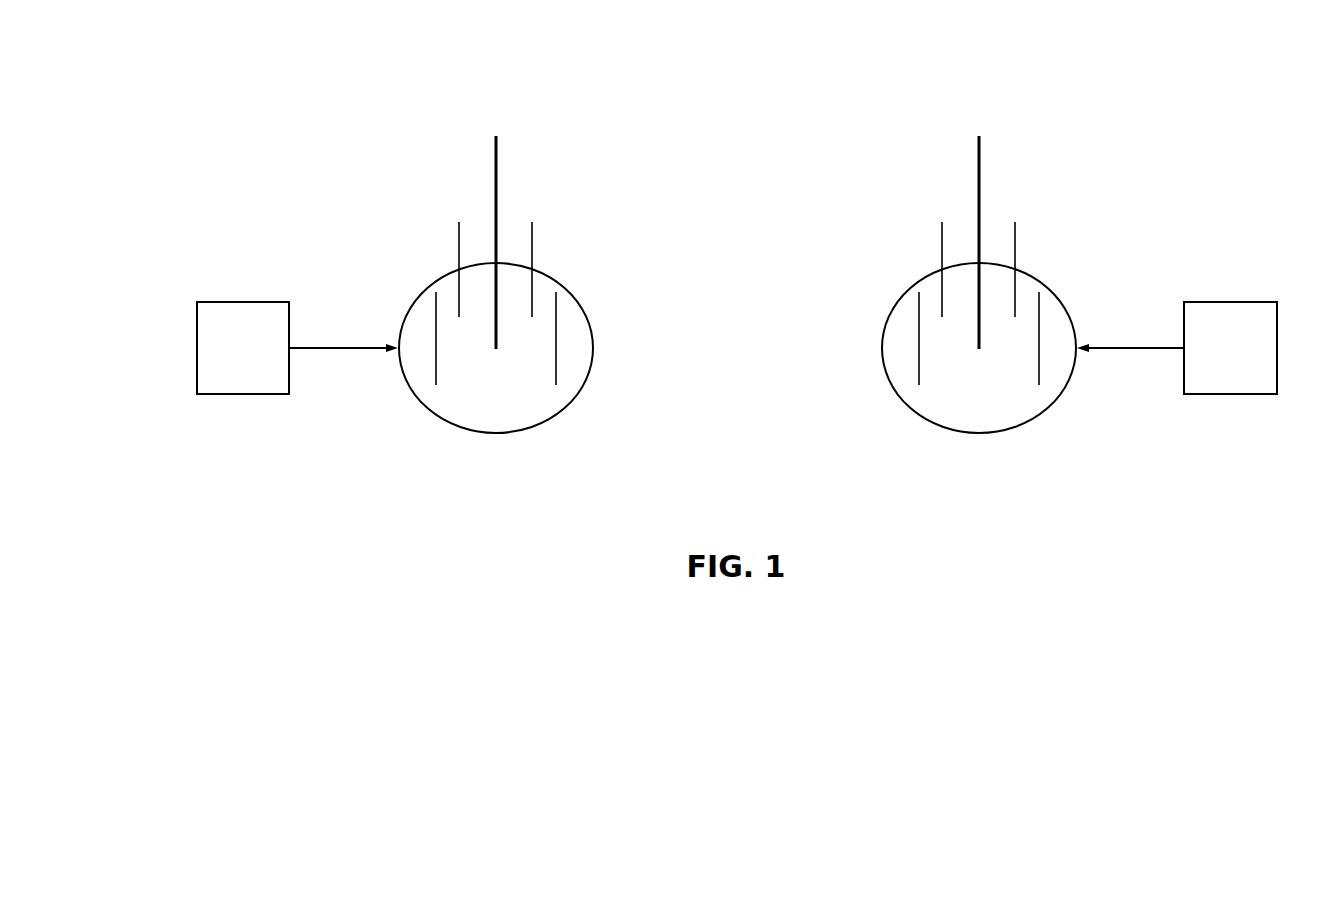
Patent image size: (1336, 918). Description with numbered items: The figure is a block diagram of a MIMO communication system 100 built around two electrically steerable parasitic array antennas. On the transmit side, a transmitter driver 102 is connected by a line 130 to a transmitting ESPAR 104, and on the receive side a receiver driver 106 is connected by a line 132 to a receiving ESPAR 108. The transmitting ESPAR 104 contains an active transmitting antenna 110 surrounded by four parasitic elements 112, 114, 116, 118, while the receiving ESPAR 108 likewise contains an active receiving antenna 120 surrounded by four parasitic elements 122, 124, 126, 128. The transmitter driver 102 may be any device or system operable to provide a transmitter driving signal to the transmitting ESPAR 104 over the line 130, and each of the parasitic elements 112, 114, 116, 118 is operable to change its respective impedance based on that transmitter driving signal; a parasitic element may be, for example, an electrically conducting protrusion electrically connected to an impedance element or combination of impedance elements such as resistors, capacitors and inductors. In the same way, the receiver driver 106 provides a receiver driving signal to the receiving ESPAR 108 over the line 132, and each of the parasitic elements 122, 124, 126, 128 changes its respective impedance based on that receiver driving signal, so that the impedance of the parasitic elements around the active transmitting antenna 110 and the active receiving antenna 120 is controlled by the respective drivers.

The MIMO communication system 100 is at (229, 62).
The transmitter driver 102 is at (225, 362).
The transmitting electrically steerable parasitic array antenna (ESPAR) 104 is at (476, 396).
The receiver driver 106 is at (1212, 362).
The receiving ESPAR 108 is at (979, 317).
The active transmitting antenna 110 is at (486, 151).
The parasitic element 112 is at (426, 310).
The parasitic element 114 is at (449, 241).
The parasitic element 116 is at (566, 310).
The parasitic element 118 is at (543, 241).
The active receiving antenna 120 is at (931, 237).
The parasitic element 122 is at (871, 333).
The parasitic element 124 is at (896, 265).
The parasitic element 126 is at (1087, 333).
The parasitic element 128 is at (1064, 265).
The line 130 is at (344, 363).
The line 132 is at (1139, 363).